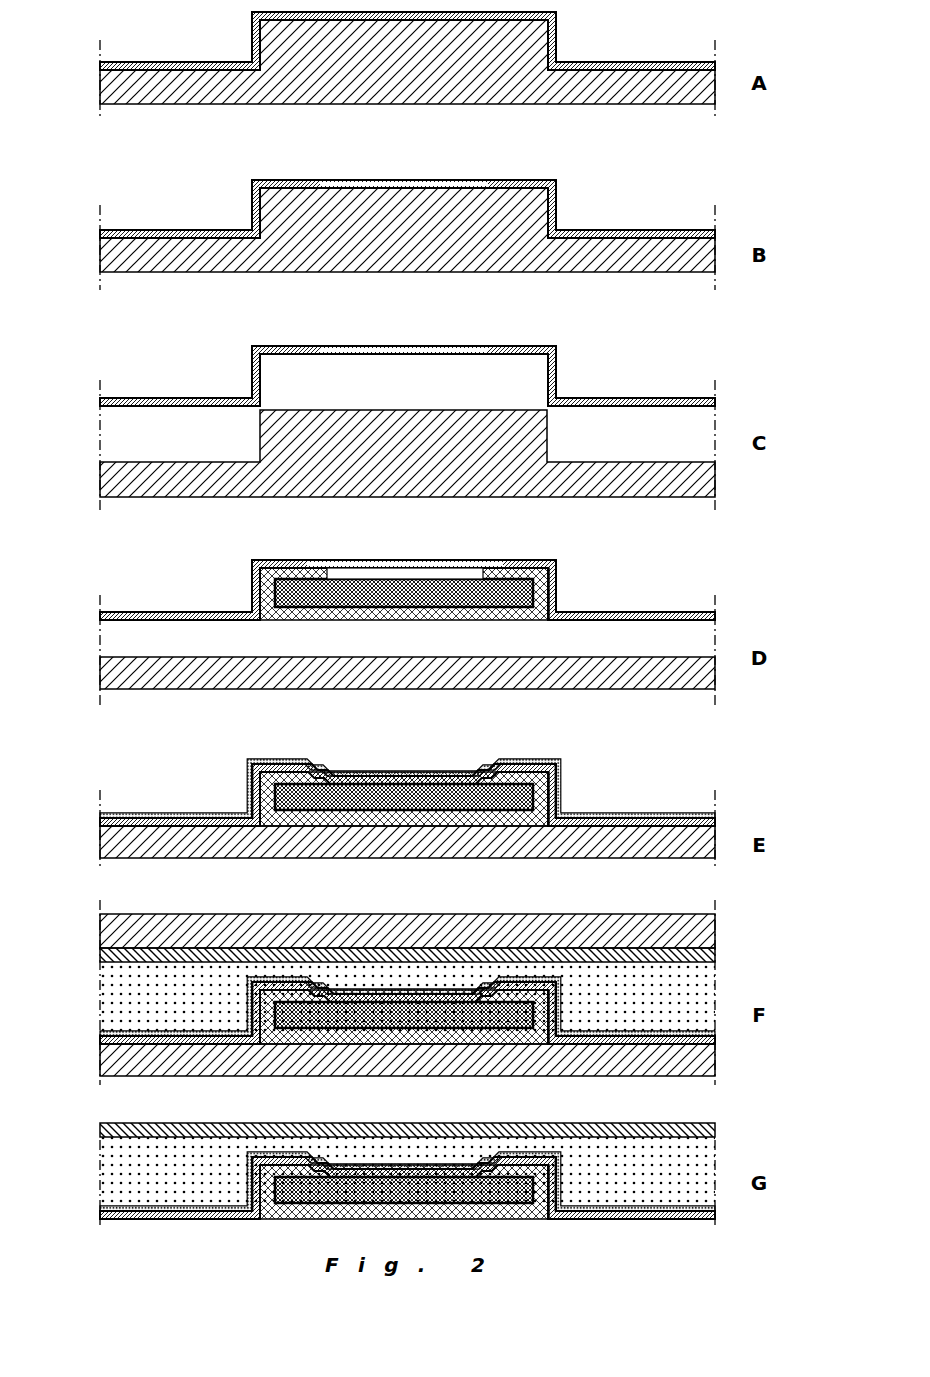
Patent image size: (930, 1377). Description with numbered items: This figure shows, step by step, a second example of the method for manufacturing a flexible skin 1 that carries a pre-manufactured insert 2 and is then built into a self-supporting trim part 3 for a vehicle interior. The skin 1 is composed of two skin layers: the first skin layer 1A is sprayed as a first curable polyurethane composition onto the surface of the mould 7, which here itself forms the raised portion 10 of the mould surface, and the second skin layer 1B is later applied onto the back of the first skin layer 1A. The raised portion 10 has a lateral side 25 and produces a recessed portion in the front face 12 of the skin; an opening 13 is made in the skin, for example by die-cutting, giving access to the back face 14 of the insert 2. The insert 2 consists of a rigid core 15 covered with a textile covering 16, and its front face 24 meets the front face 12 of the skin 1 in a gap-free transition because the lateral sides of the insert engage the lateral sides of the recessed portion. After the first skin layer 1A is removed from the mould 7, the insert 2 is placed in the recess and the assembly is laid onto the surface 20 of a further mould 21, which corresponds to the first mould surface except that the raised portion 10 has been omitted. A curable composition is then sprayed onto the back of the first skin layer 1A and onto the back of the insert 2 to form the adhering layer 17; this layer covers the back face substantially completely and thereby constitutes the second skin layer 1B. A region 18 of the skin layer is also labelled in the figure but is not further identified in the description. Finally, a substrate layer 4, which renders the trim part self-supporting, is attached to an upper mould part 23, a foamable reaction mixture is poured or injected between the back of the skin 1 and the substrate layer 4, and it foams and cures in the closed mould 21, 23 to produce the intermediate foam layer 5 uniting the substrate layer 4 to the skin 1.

The flexible skin 1 is at (722, 817).
The first skin layer 1A is at (683, 62).
The second skin layer 1B is at (670, 812).
The insert 2 is at (514, 625).
The trim part 3 is at (93, 1183).
The substrate layer 4 is at (680, 958).
The intermediate foam layer 5 is at (678, 985).
The mould 7 is at (600, 95).
The raised portion 10 is at (482, 410).
The front face of the skin 12 is at (187, 620).
The opening 13 is at (380, 348).
The back face of the insert 14 is at (422, 578).
The rigid core 15 is at (357, 593).
The textile covering 16 is at (437, 605).
The adhering layer 17 is at (498, 768).
The raised portion of first layer 18 is at (625, 610).
The further mould surface 20 is at (582, 656).
The further mould 21 is at (598, 675).
The upper mould part 23 is at (680, 937).
The front face of the insert 24 is at (352, 608).
The lateral side 25 is at (258, 432).